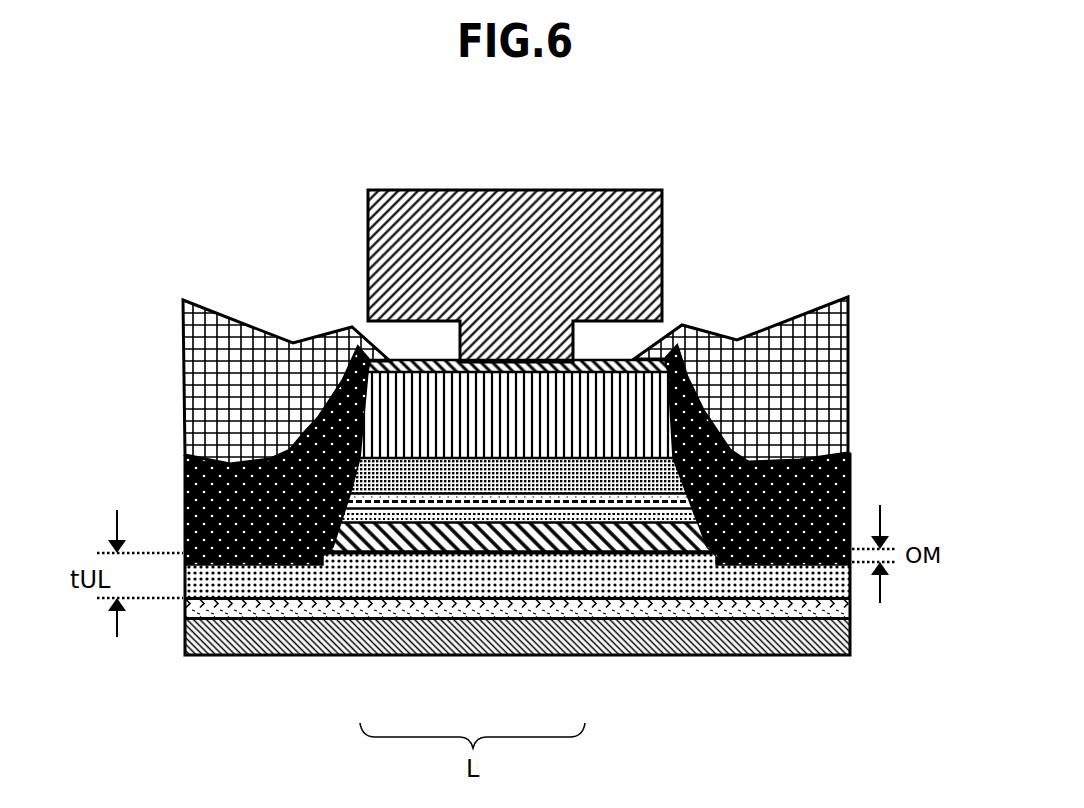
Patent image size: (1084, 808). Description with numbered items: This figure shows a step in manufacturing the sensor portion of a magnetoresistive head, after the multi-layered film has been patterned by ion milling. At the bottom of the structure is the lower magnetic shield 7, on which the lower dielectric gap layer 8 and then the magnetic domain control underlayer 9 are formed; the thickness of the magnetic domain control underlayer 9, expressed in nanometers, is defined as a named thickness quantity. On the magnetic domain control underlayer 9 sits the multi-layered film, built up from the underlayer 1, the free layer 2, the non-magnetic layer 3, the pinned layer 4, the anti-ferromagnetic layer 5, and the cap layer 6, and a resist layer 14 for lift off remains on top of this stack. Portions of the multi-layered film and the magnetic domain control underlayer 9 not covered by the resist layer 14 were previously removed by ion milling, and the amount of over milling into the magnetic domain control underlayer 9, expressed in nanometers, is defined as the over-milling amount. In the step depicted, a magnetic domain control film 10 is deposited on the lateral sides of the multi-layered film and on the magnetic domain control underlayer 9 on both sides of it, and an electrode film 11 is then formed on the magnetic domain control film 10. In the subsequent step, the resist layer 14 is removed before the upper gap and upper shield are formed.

The underlayer 1 is at (372, 535).
The free layer 2 is at (407, 515).
The non-magnetic layer 3 is at (441, 500).
The pinned layer 4 is at (479, 470).
The anti-ferromagnetic layer 5 is at (524, 430).
The cap layer 6 is at (571, 372).
The lower magnetic shield 7 is at (688, 632).
The lower dielectric gap layer 8 is at (729, 605).
The magnetic domain control underlayer 9 is at (766, 580).
The magnetic domain control film 10 is at (186, 481).
The electrode film 11 is at (207, 373).
The resist layer 14 is at (662, 238).